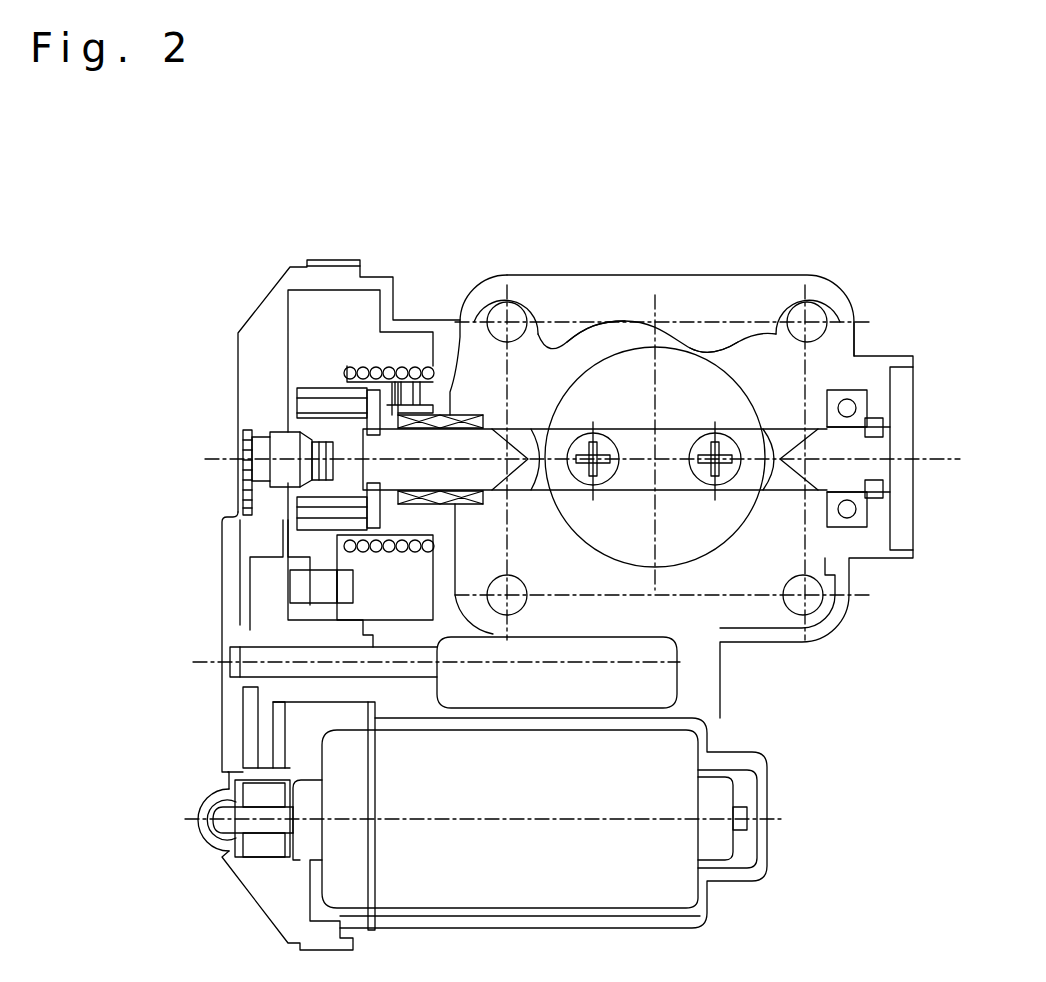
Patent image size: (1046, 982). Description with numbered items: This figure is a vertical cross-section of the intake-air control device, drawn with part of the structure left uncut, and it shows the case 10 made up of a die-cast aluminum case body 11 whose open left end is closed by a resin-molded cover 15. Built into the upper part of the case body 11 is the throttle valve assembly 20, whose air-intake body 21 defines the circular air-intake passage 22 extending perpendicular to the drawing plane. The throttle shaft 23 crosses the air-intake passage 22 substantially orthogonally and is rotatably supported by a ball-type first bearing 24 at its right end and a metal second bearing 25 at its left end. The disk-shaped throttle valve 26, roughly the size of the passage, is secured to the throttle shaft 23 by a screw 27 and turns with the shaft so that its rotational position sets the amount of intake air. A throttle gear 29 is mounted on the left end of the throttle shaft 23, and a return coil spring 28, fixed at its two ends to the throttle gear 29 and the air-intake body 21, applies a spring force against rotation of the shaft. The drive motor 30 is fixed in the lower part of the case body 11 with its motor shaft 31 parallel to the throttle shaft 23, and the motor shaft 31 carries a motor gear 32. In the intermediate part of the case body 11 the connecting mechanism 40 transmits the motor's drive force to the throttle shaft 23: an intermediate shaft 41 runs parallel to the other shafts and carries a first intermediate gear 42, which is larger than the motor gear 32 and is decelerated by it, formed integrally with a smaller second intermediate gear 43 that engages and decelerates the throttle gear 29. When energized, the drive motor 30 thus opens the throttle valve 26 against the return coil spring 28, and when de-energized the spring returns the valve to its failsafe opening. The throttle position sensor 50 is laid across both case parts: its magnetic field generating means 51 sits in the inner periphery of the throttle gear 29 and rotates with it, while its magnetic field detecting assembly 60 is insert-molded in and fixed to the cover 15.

The case 10 is at (510, 237).
The case body 11 is at (838, 273).
The cover 15 is at (257, 380).
The throttle valve assembly 20 is at (690, 322).
The air-intake body 21 is at (703, 287).
The air-intake passage 22 is at (712, 333).
The throttle shaft 23 is at (472, 412).
The first bearing 24 is at (843, 388).
The second bearing 25 is at (453, 447).
The throttle valve 26 is at (632, 375).
The screw 27 is at (697, 480).
The return coil spring 28 is at (373, 365).
The throttle gear 29 is at (317, 583).
The drive motor 30 is at (660, 760).
The motor shaft 31 is at (238, 816).
The motor gear 32 is at (258, 847).
The connecting mechanism 40 is at (226, 656).
The intermediate shaft 41 is at (228, 672).
The first intermediate gear 42 is at (263, 733).
The second intermediate gear 43 is at (312, 627).
The throttle position sensor 50 is at (240, 435).
The magnetic field generating means 51 is at (307, 380).
The magnetic field detecting assembly 60 is at (258, 472).